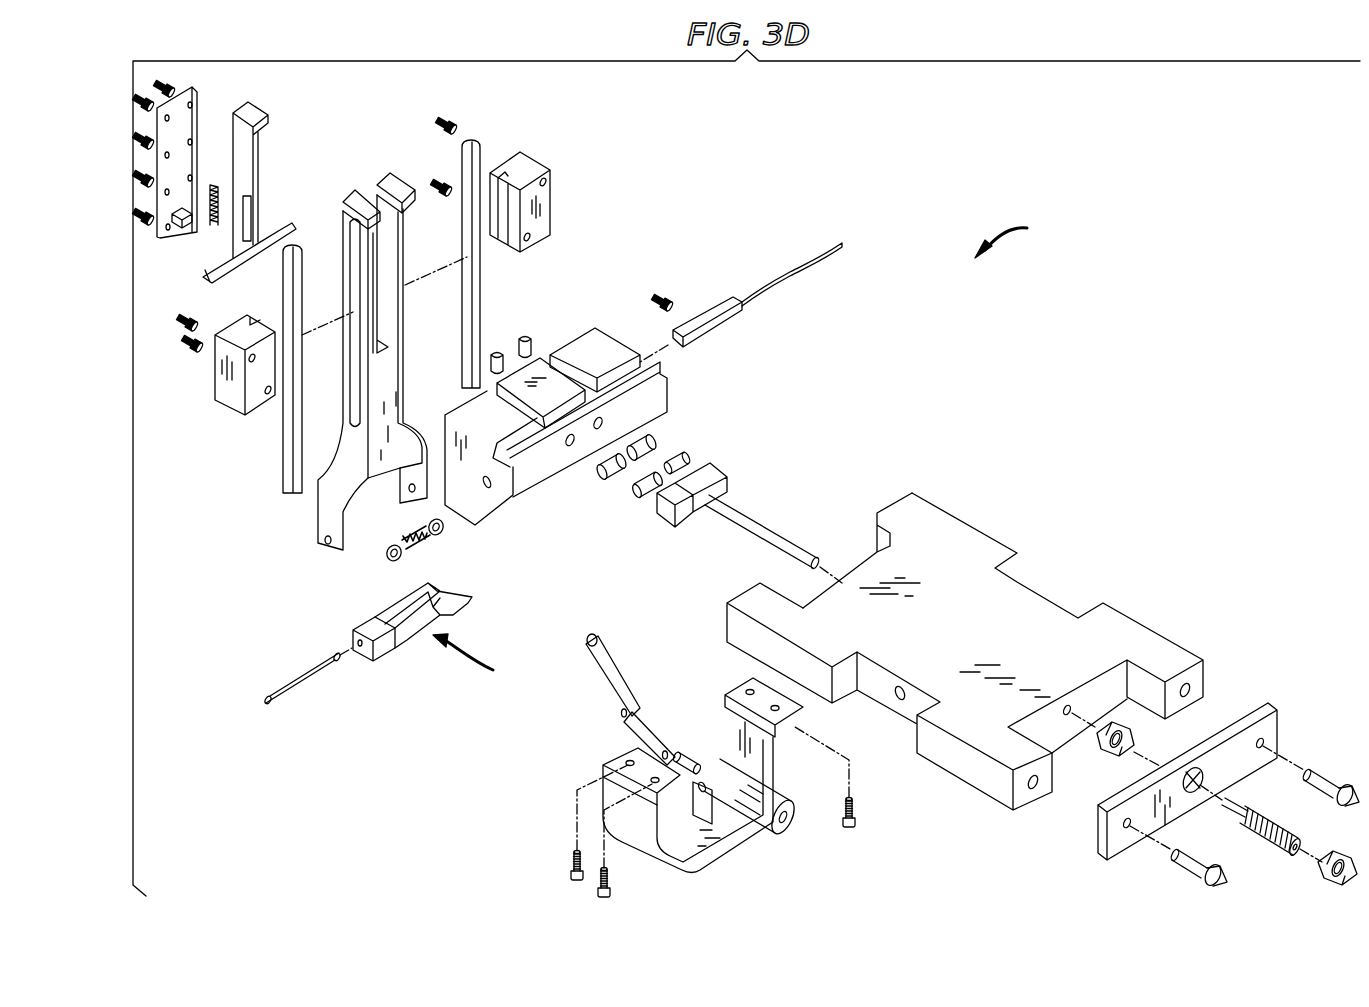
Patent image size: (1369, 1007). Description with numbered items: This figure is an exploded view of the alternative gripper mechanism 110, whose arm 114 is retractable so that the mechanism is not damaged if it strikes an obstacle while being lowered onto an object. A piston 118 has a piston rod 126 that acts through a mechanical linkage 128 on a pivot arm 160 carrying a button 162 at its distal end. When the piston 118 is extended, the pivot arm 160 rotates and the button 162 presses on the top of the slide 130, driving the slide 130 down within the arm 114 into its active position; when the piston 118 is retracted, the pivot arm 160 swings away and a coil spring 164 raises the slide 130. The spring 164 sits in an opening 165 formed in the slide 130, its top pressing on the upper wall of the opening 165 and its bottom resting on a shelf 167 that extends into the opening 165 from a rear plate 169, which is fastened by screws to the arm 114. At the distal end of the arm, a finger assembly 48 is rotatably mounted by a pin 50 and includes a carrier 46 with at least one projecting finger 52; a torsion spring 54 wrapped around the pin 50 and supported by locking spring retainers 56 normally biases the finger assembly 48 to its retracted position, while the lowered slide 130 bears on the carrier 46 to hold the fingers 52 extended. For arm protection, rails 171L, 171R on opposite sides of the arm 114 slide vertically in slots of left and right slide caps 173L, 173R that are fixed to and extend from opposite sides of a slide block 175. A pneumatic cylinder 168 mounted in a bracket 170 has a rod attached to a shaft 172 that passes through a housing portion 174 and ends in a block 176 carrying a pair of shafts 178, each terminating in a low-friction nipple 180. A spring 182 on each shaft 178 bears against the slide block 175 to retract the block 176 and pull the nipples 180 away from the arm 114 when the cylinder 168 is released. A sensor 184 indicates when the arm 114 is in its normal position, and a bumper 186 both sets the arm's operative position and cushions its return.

The mechanism 110 is at (1019, 236).
The arm 114 is at (380, 175).
The piston 118 is at (792, 822).
The piston rod 126 is at (683, 752).
The mechanical linkage 128 is at (648, 723).
The slide 130 is at (203, 280).
The pivot arm 160 is at (608, 637).
The button 162 is at (588, 647).
The coil spring 164 is at (213, 183).
The opening 165 is at (253, 212).
The shelf 167 is at (180, 228).
The pneumatic cylinder 168 is at (1262, 838).
The rear plate 169 is at (198, 100).
The bracket 170 is at (728, 852).
The left rail 171L is at (283, 462).
The right rail 171R is at (462, 165).
The shaft 172 is at (765, 527).
The left slide cap 173L is at (215, 378).
The right slide cap 173R is at (543, 158).
The housing portion 174 is at (967, 525).
The slide block 175 is at (505, 505).
The block 176 is at (720, 470).
The shafts 178 is at (683, 457).
The nipple 180 is at (650, 497).
The spring 182 is at (605, 472).
The sensor 184 is at (720, 328).
The bumper 186 is at (525, 337).
The carrier 46 is at (367, 652).
The finger assembly 48 is at (433, 643).
The pin 50 is at (282, 688).
The projecting finger 52 is at (460, 614).
The torsion spring 54 is at (413, 532).
The locking spring retainers 56 is at (387, 556).